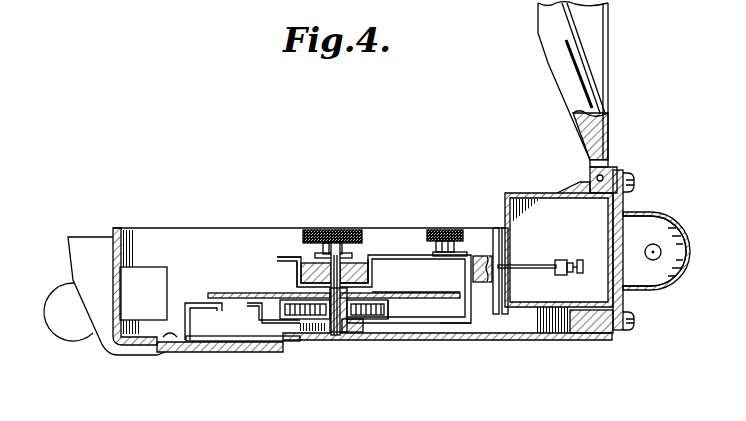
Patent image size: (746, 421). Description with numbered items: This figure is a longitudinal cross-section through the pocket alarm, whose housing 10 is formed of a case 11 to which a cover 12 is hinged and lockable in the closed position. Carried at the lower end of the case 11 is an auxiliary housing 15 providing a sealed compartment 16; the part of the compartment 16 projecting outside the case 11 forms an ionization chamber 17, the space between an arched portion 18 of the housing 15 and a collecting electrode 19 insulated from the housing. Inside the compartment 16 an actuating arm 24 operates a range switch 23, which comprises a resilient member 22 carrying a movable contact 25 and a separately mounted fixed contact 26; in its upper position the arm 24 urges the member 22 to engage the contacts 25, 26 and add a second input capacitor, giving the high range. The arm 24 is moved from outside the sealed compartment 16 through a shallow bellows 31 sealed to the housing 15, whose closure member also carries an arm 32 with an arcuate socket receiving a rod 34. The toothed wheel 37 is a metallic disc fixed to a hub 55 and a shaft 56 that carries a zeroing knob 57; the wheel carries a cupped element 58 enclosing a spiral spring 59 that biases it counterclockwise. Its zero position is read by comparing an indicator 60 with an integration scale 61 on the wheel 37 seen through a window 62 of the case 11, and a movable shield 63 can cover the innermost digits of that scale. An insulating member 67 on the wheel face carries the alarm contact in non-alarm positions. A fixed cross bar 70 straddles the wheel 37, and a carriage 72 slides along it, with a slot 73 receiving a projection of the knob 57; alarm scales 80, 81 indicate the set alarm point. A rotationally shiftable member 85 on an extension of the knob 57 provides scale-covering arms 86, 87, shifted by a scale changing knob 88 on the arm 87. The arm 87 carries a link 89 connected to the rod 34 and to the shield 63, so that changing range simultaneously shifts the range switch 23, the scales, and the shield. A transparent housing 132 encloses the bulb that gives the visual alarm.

The housing 10 is at (182, 226).
The case 11 is at (142, 228).
The cover 12 is at (604, 82).
The auxiliary housing 15 is at (632, 212).
The sealed compartment 16 is at (527, 193).
The ionization chamber 17 is at (668, 232).
The arched portion 18 is at (690, 250).
The collecting electrode 19 is at (661, 258).
The resilient member 22 is at (571, 262).
The range switch 23 is at (583, 257).
The actuating arm 24 is at (543, 265).
The movable contact 25 is at (561, 276).
The fixed contact 26 is at (578, 274).
The shallow bellows 31 is at (504, 318).
The arm 32 is at (474, 272).
The rod 34 is at (496, 322).
The toothed wheel 37 is at (222, 310).
The hub 55 is at (342, 331).
The shaft 56 is at (338, 341).
The zeroing knob 57 is at (343, 230).
The cupped element 58 is at (392, 309).
The spiral spring 59 is at (379, 321).
The indicator 60 is at (200, 303).
The integration scale 61 is at (225, 304).
The window 62 is at (216, 351).
The movable shield 63 is at (258, 308).
The insulating member 67 is at (380, 296).
The cross bar 70 is at (303, 281).
The carriage 72 is at (305, 282).
The slot 73 is at (326, 233).
The alarm scale 80 is at (292, 258).
The alarm scale 81 is at (388, 256).
The rotationally shiftable member 85 is at (377, 246).
The scale-covering arm 86 is at (290, 262).
The scale-covering arm 87 is at (412, 254).
The scale changing knob 88 is at (450, 229).
The link 89 is at (463, 309).
The transparent housing 132 is at (76, 340).